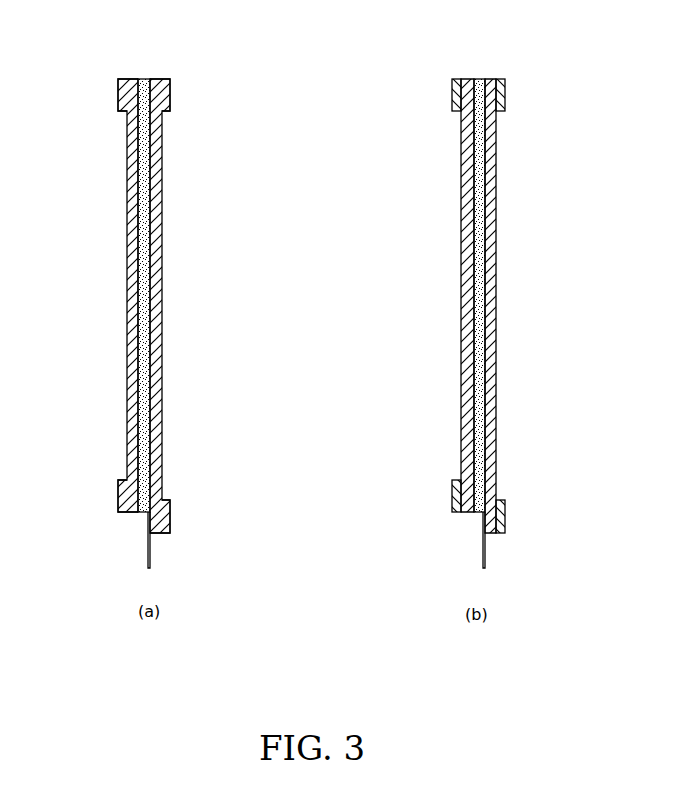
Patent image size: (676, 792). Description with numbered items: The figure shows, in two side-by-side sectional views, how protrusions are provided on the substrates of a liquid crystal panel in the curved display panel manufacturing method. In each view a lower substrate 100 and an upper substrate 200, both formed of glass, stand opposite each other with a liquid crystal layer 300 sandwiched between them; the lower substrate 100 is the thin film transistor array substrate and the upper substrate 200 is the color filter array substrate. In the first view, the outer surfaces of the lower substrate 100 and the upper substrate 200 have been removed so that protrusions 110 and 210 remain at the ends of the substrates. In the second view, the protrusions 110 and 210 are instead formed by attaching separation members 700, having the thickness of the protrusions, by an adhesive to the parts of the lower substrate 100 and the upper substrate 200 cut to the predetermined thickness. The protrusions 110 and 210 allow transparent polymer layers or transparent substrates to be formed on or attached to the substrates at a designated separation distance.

The lower substrate 100 is at (125, 263).
The protrusion 110 is at (118, 100).
The upper substrate 200 is at (163, 287).
The protrusion 210 is at (170, 90).
The liquid crystal layer 300 is at (145, 79).
The separation member 700 is at (452, 97).